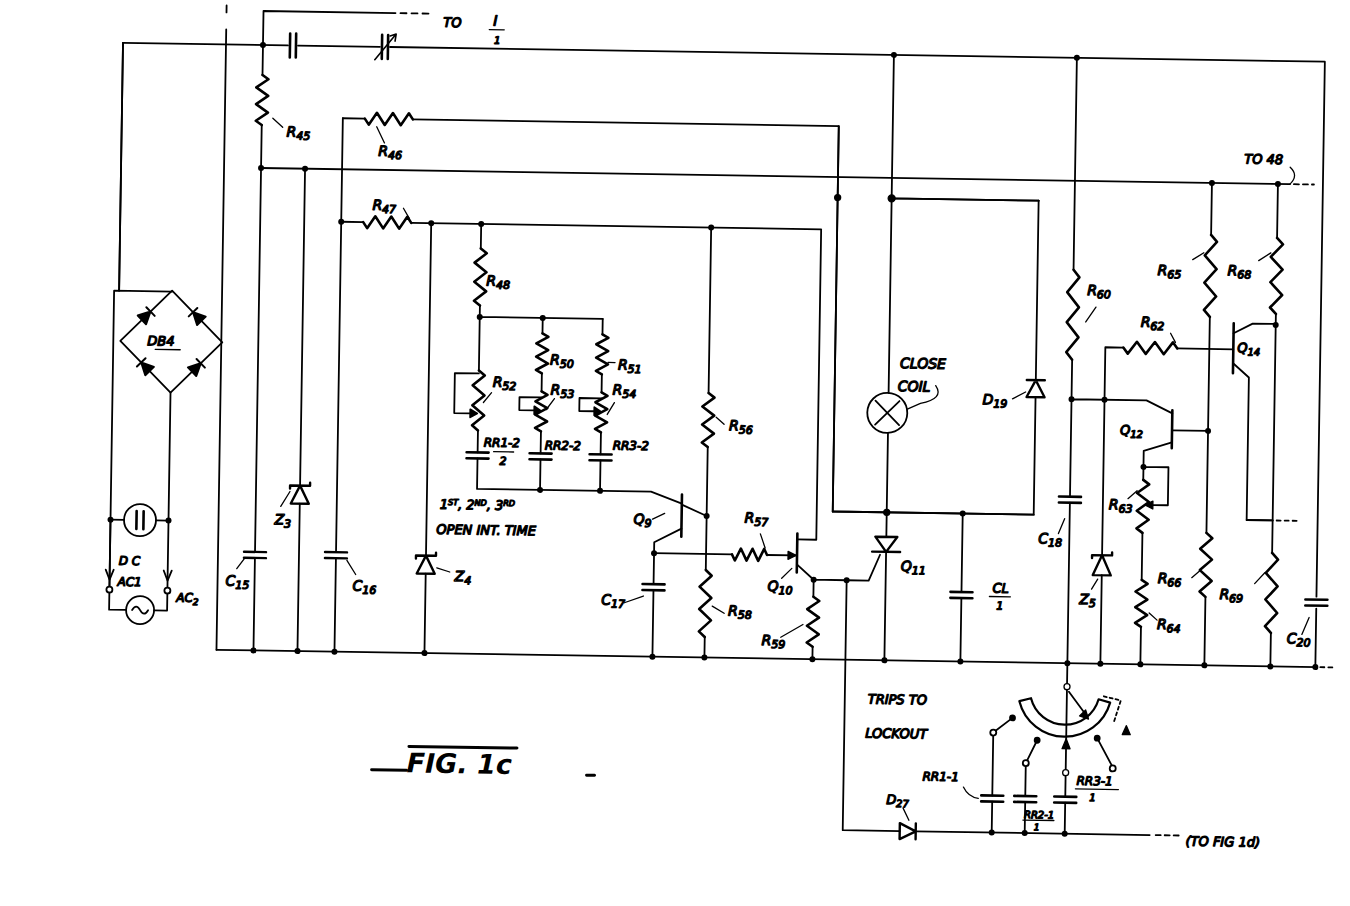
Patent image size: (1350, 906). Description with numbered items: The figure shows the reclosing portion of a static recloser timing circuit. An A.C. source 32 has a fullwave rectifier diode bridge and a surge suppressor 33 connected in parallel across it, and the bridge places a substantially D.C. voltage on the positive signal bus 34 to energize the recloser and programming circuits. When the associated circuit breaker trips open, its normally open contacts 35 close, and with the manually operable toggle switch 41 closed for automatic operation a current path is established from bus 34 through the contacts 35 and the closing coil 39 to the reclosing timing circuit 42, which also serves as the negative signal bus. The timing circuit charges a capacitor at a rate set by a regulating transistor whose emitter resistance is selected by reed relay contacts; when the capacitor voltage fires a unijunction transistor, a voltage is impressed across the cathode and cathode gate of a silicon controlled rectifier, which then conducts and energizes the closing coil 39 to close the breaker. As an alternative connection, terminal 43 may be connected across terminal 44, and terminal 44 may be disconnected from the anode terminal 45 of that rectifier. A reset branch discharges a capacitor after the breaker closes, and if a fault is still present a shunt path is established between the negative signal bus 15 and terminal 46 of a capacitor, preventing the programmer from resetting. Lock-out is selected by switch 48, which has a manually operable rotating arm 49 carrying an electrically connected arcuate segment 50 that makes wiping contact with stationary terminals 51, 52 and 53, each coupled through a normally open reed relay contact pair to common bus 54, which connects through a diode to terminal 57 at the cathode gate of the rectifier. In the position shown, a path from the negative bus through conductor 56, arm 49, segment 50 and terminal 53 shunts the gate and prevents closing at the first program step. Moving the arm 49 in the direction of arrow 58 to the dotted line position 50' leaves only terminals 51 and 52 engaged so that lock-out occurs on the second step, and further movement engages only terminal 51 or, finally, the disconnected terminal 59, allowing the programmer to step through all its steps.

The negative signal bus 15 is at (229, 21).
The A.C. source 32 is at (149, 627).
The surge suppressor 33 is at (152, 505).
The positive signal bus 34 is at (128, 193).
The normally open contacts 35 is at (296, 60).
The closing coil 39 is at (913, 411).
The toggle switch 41 is at (388, 60).
The reclosing timing circuit 42 is at (698, 652).
The terminal 43 is at (897, 191).
The terminal 44 is at (835, 189).
The anode terminal 45 is at (897, 500).
The terminal of capacitor C20 46 is at (1288, 501).
The switch 48 is at (1028, 670).
The rotating arm 49 is at (1115, 691).
The arcuate segment 50 is at (1053, 716).
The dotted line position of arcuate segment 50' is at (1141, 710).
The stationary terminal 51 is at (1075, 747).
The stationary terminal 52 is at (1045, 732).
The stationary terminal 53 is at (1003, 712).
The common bus 54 is at (1126, 821).
The conductor 56 is at (1085, 679).
The terminal 57 is at (853, 563).
The arrow 58 is at (1140, 719).
The disconnected terminal 59 is at (1133, 748).